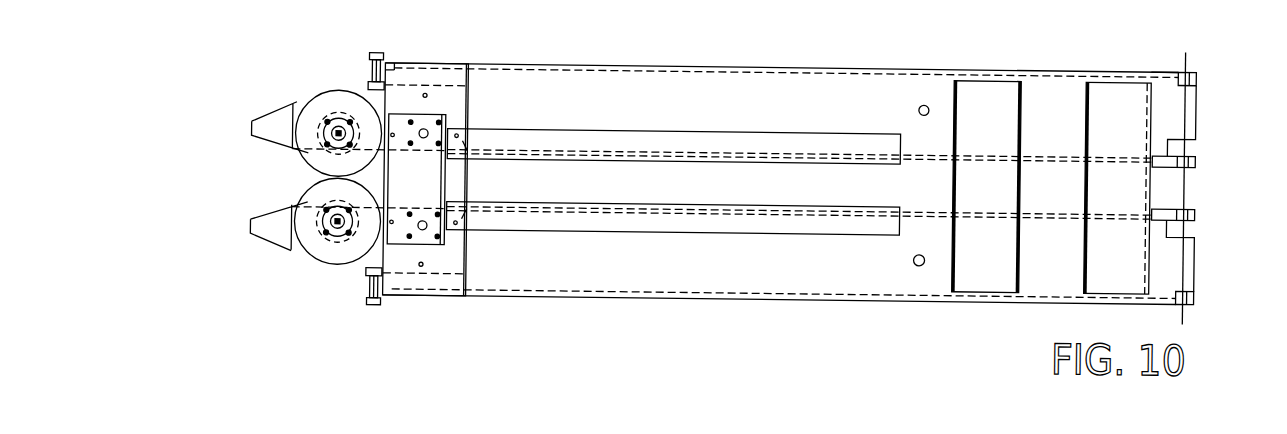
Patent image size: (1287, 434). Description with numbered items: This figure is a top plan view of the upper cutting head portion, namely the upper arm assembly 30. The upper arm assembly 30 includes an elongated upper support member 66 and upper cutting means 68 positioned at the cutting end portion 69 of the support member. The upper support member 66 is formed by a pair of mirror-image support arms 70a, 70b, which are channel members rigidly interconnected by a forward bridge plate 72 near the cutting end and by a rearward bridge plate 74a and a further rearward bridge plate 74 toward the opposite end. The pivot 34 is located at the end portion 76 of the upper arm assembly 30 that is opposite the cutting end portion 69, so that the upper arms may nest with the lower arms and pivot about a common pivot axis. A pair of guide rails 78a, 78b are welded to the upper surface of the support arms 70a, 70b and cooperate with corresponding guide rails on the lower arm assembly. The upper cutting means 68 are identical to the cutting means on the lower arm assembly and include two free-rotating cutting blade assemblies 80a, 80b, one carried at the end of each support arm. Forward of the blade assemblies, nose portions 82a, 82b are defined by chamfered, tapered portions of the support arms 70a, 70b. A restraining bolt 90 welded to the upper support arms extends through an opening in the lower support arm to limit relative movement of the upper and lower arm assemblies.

The upper arm assembly 30 is at (822, 50).
The pivot 34 is at (1187, 55).
The upper support member 66 is at (660, 294).
The upper cutting means 68 is at (333, 89).
The end portion 69 is at (415, 63).
The support arm 70a is at (642, 63).
The support arm 70b is at (780, 292).
The forward bridge plate 72 is at (445, 184).
The rearward bridge plate 74 is at (1084, 188).
The rearward bridge plate 74a is at (1023, 100).
The end portion 76 is at (1195, 240).
The guide rail 78a is at (483, 127).
The guide rail 78b is at (610, 230).
The cutting blade assembly 80a is at (300, 111).
The cutting blade assembly 80b is at (333, 271).
The nose portion 82a is at (272, 114).
The nose portion 82b is at (272, 212).
The restraining bolt 90 is at (917, 101).